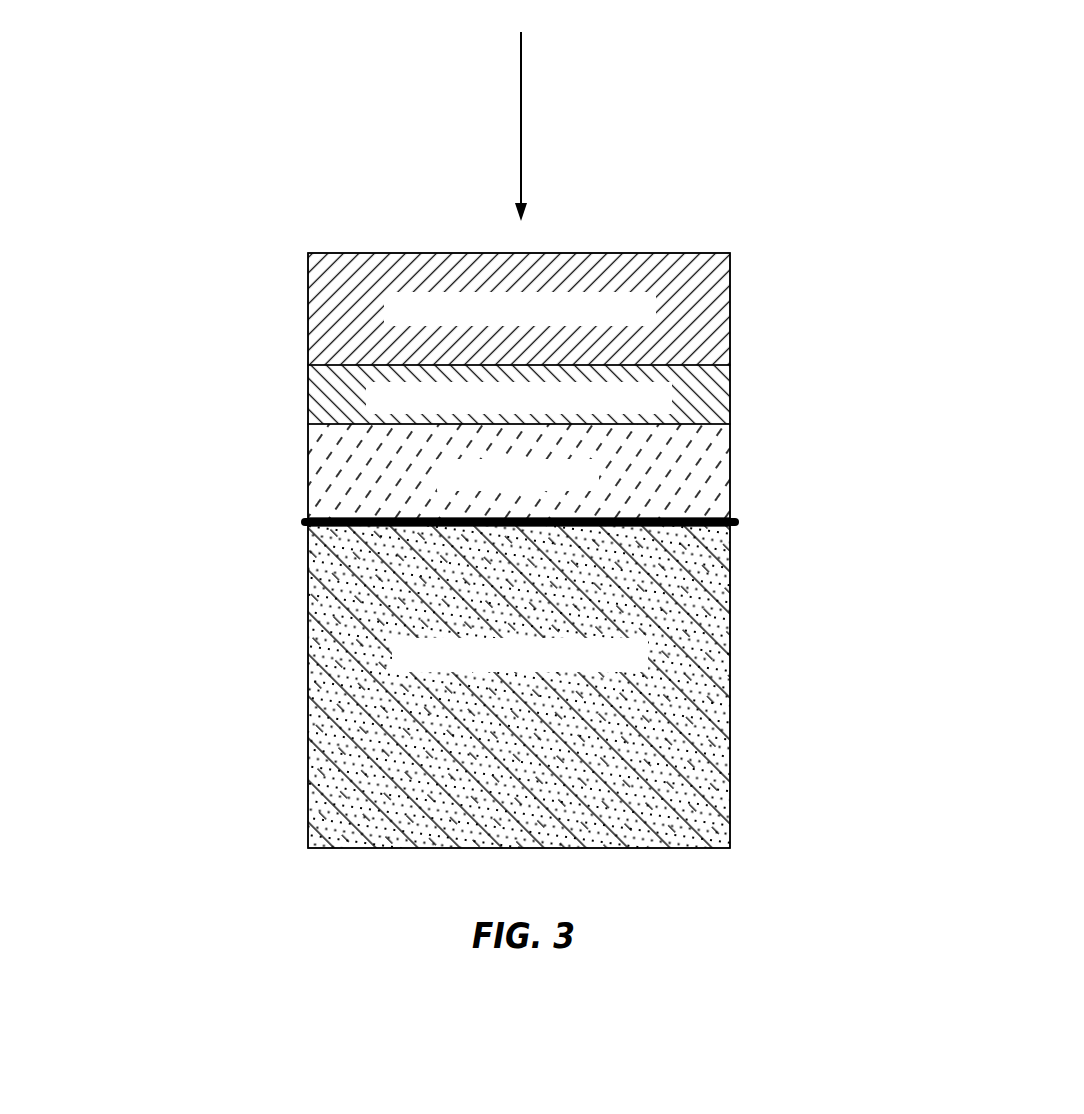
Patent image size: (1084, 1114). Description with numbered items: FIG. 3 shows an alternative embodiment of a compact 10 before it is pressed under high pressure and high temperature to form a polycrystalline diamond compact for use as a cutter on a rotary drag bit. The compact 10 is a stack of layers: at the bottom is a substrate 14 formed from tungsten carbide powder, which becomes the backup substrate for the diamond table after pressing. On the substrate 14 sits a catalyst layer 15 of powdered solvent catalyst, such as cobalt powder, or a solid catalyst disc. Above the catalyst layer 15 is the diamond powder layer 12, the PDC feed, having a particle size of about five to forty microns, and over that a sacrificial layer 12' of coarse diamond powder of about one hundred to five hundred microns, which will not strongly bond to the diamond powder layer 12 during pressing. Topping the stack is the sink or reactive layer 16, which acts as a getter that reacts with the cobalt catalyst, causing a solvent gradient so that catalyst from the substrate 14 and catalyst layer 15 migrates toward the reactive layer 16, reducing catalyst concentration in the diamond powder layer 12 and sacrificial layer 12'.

The compact 10 is at (156, 553).
The diamond powder layer 12 is at (570, 471).
The sacrificial layer 12' is at (571, 394).
The substrate 14 is at (532, 709).
The catalyst layer 15 is at (303, 524).
The reactive layer 16 is at (703, 300).